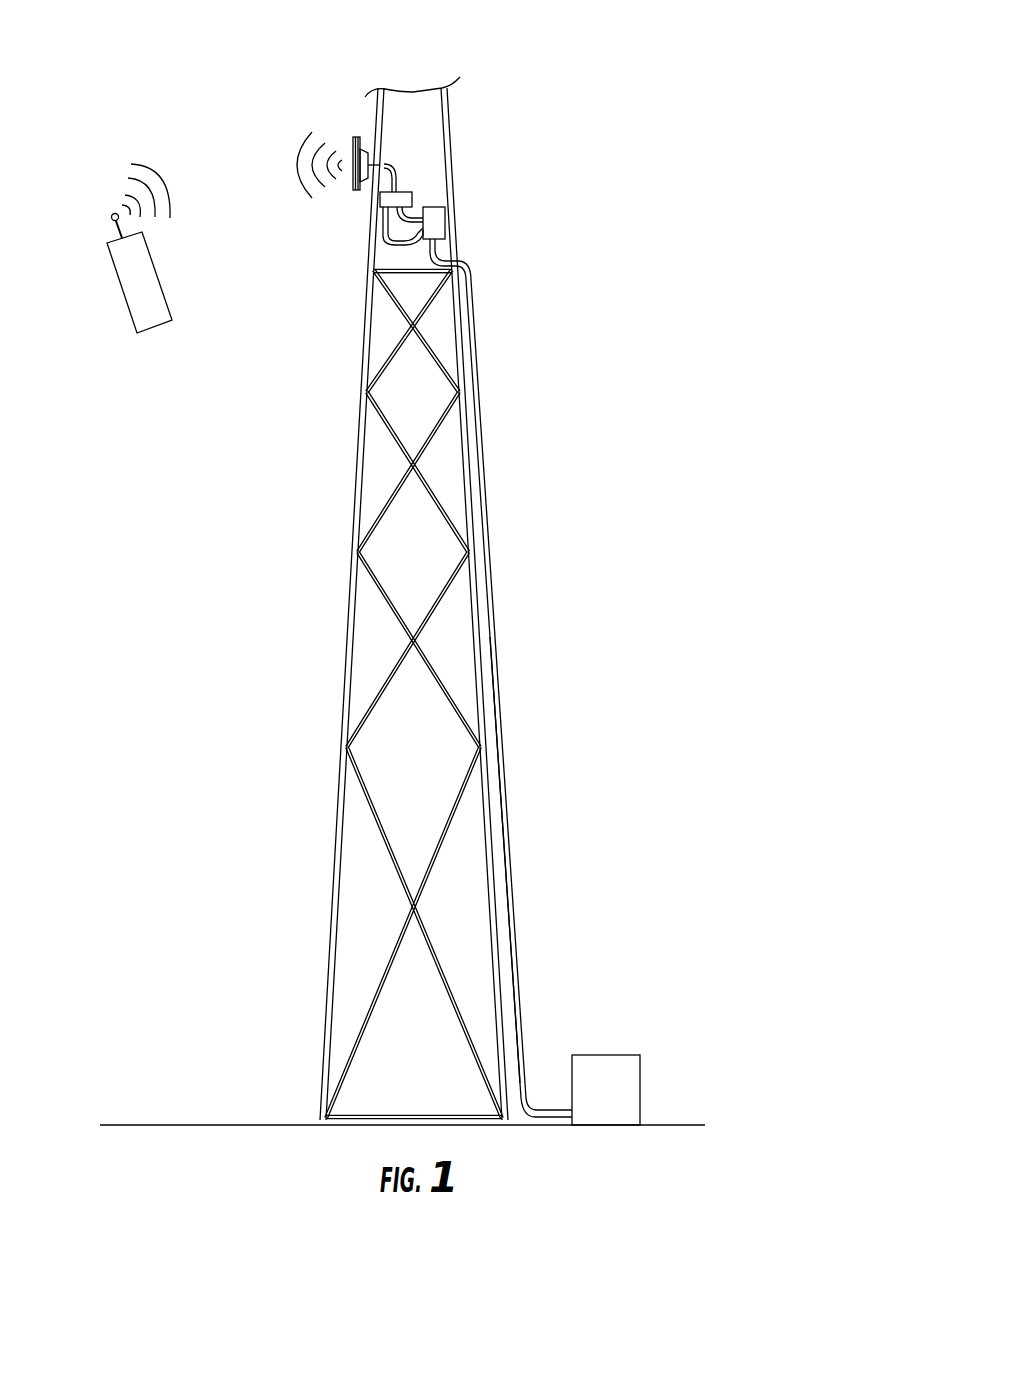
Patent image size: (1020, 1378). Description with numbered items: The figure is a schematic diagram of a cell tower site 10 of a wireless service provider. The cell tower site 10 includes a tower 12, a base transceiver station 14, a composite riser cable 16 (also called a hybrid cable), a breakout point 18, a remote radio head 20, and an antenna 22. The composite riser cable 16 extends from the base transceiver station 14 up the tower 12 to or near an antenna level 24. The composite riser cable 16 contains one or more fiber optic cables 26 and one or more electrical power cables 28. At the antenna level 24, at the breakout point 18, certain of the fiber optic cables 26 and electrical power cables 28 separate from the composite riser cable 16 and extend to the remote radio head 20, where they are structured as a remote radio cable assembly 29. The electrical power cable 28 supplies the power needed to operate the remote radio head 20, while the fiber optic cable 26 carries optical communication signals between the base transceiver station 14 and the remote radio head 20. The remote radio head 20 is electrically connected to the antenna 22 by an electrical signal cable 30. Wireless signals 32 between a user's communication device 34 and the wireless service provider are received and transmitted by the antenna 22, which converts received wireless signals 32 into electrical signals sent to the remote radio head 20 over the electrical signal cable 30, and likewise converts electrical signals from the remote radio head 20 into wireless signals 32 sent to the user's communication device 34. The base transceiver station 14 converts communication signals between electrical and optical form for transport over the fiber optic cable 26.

The cell tower site 10 is at (594, 63).
The tower 12 is at (451, 186).
The base transceiver station 14 is at (599, 1055).
The composite riser cable 16 is at (505, 808).
The breakout point 18 is at (438, 226).
The remote radio head 20 is at (380, 201).
The antenna 22 is at (348, 137).
The antenna level 24 is at (390, 263).
The fiber optic cable 26 is at (418, 205).
The electrical power cable 28 is at (382, 240).
The remote radio cable assembly 29 is at (413, 254).
The electrical signal cable 30 is at (396, 164).
The wireless signals 32 is at (322, 118).
The user's communication device 34 is at (125, 305).